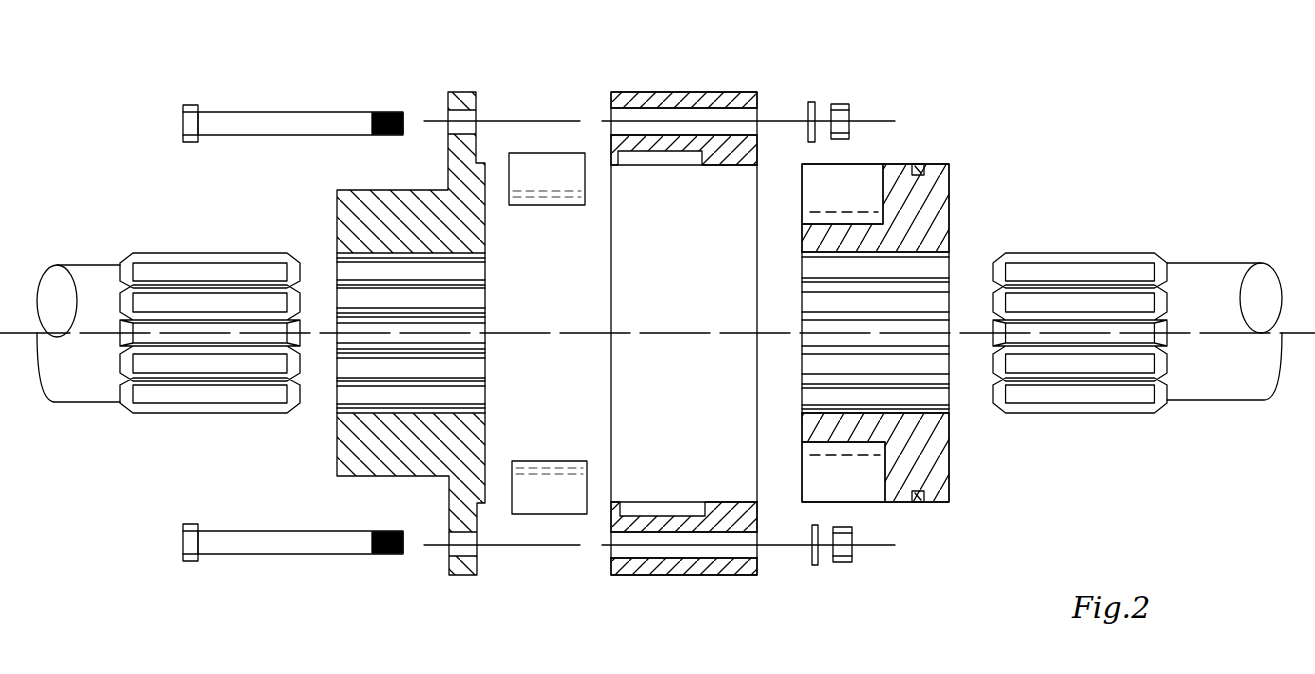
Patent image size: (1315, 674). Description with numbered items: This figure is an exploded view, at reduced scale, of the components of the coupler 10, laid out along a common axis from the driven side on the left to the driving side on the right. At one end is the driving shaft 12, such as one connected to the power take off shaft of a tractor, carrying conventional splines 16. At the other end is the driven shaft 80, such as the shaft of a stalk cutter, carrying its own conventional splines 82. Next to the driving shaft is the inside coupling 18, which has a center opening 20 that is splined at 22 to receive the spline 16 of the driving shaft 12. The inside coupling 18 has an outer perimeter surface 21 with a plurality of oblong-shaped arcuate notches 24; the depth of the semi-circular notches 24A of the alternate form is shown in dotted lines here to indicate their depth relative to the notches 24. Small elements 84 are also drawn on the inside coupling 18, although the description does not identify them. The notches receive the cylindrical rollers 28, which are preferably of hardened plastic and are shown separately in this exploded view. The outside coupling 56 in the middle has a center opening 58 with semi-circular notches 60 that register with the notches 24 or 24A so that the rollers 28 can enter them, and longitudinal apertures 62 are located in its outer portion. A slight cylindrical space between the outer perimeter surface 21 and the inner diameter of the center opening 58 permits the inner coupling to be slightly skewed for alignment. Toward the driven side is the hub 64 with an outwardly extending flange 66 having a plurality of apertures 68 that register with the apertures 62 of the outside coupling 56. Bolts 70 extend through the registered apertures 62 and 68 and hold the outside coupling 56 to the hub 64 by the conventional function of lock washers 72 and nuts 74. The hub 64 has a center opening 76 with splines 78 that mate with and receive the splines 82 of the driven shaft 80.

The coupler 10 is at (1015, 87).
The driving shaft 12 is at (1215, 252).
The splines 16 is at (1100, 252).
The inside coupling 18 is at (917, 345).
The center opening 20 is at (965, 345).
The outer perimeter surface 21 is at (930, 185).
The splines 22 is at (952, 350).
The oblong-shaped arcuate notches 24 is at (866, 180).
The semi-circular notches 24A is at (858, 455).
The cylindrical rollers 28 is at (518, 205).
The outside coupling 56 is at (729, 315).
The center opening 58 is at (643, 226).
The semi-circular notches 60 is at (652, 160).
The longitudinal apertures 62 is at (709, 113).
The hub 64 is at (421, 341).
The flange 66 is at (478, 100).
The apertures 68 is at (470, 115).
The bolts 70 is at (271, 114).
The lock washers 72 is at (812, 105).
The nuts 74 is at (850, 110).
The center opening 76 is at (487, 413).
The splines 78 is at (345, 298).
The driven shaft 80 is at (76, 252).
The splines 82 is at (177, 270).
The plug 84 is at (922, 498).